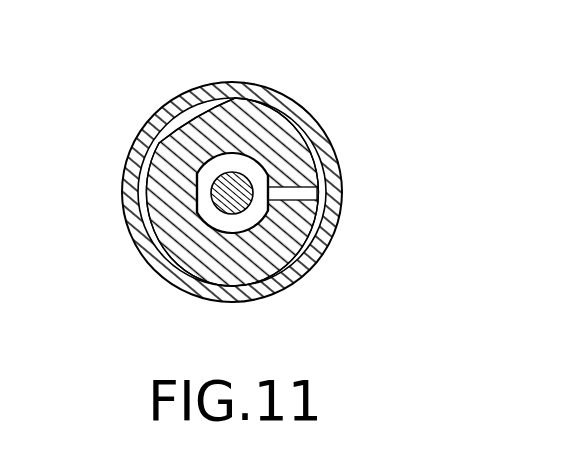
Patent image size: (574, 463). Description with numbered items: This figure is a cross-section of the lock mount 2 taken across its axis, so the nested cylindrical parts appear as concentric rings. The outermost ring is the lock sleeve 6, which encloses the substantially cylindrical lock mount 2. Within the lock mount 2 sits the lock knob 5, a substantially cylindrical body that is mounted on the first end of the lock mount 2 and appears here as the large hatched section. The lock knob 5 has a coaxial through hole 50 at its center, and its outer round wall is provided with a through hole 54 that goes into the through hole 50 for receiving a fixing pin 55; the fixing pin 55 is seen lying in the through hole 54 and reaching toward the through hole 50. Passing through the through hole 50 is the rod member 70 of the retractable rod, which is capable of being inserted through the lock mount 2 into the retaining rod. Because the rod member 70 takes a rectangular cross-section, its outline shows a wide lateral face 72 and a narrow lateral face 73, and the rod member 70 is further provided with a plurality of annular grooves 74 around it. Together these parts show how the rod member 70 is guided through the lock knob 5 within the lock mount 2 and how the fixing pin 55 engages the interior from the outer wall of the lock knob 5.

The lock mount 2 is at (137, 243).
The lock sleeve 6 is at (162, 275).
The narrow lateral face 73 is at (157, 140).
The annular grooves 74 is at (218, 170).
The rod member 70 is at (238, 182).
The wide lateral face 72 is at (268, 177).
The fixing pin 55 is at (305, 193).
The through hole 54 is at (318, 224).
The lock knob 5 is at (288, 245).
The through hole 50 is at (258, 257).